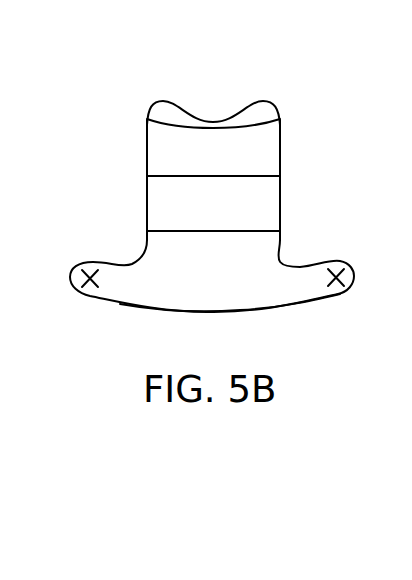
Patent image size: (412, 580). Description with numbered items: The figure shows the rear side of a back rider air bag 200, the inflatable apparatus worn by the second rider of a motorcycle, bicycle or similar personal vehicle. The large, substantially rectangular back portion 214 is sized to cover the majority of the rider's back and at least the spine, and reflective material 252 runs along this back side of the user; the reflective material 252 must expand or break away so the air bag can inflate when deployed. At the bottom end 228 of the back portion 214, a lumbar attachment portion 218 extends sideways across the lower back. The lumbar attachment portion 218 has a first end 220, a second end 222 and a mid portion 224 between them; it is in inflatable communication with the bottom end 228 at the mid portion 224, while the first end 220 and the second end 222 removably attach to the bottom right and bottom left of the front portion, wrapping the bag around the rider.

The back rider air bag 200 is at (182, 67).
The back portion 214 is at (263, 135).
The reflective material 252 is at (152, 211).
The bottom end 228 is at (260, 250).
The first end 220 is at (93, 272).
The second end 222 is at (343, 270).
The mid portion 224 is at (188, 298).
The lumbar attachment portion 218 is at (273, 290).